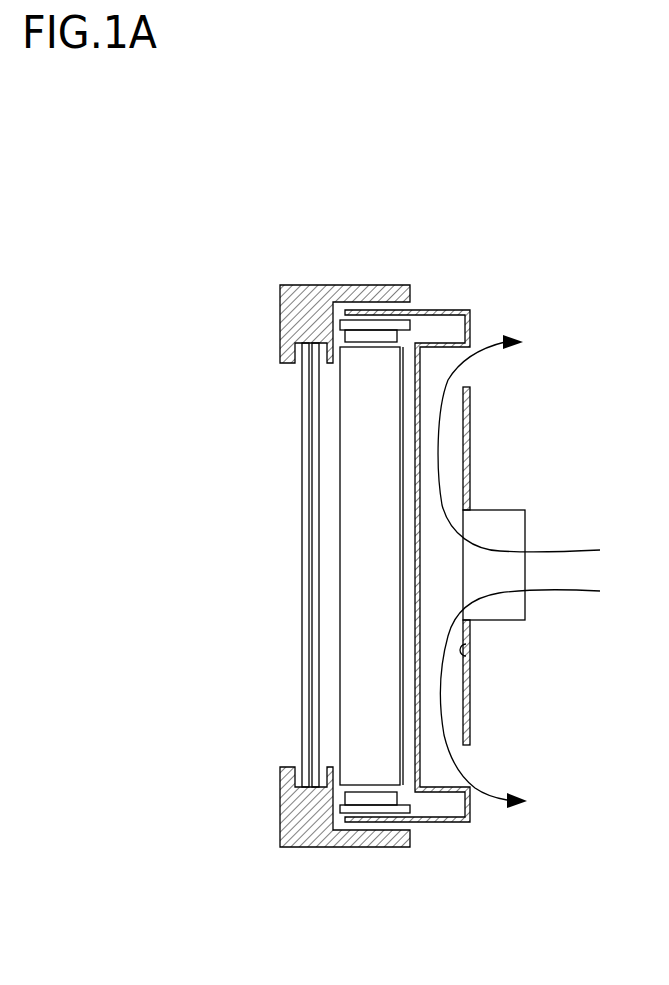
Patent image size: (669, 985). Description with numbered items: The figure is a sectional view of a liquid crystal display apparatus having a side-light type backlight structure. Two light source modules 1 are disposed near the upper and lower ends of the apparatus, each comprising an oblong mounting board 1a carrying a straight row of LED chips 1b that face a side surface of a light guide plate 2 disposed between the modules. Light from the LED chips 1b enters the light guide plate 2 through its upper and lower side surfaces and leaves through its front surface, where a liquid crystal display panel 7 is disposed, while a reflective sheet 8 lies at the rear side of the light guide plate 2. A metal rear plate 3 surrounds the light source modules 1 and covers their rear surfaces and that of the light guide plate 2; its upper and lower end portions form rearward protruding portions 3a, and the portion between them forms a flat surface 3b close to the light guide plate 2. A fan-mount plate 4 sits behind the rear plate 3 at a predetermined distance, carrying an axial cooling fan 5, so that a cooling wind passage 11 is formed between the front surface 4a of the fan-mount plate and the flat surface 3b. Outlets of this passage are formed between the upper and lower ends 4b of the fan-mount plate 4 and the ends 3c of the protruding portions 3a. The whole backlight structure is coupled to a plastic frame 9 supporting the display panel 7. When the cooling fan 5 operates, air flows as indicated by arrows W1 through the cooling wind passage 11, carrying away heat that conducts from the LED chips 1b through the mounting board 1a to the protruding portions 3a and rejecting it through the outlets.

The light source module 1 is at (373, 572).
The mounting board 1a is at (352, 328).
The LED chip 1b is at (385, 337).
The light guide plate 2 is at (373, 560).
The rear plate 3 is at (454, 558).
The protruding portion 3a is at (472, 312).
The flat surface 3b is at (422, 719).
The end of protruding portion 3c is at (478, 343).
The fan-mount plate 4 is at (511, 569).
The front surface 4a is at (470, 648).
The end of fan-mount plate 4b is at (468, 385).
The cooling fan 5 is at (510, 520).
The liquid crystal display panel 7 is at (307, 612).
The reflective sheet 8 is at (403, 503).
The plastic frame 9 is at (307, 828).
The cooling wind passage 11 is at (452, 688).
The air flow arrow W1 is at (519, 568).